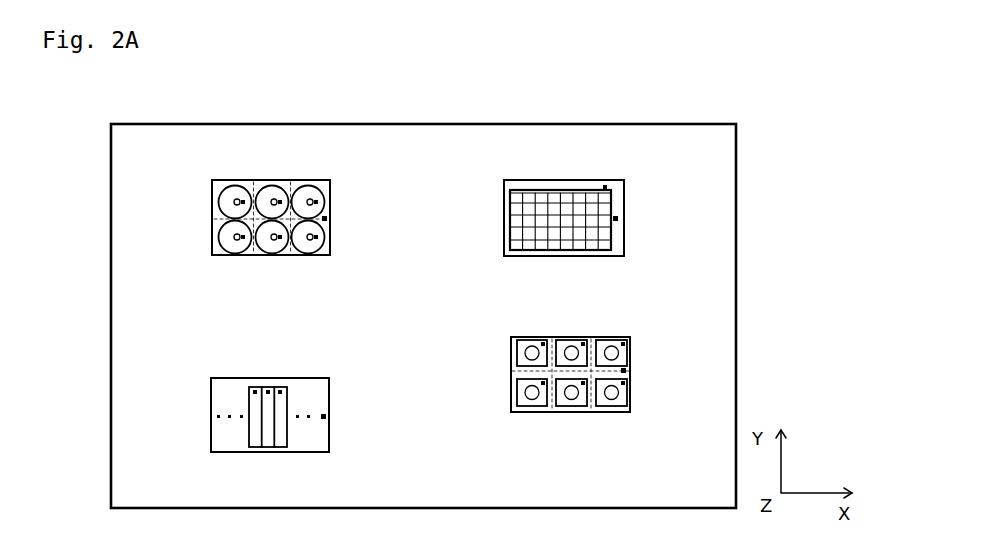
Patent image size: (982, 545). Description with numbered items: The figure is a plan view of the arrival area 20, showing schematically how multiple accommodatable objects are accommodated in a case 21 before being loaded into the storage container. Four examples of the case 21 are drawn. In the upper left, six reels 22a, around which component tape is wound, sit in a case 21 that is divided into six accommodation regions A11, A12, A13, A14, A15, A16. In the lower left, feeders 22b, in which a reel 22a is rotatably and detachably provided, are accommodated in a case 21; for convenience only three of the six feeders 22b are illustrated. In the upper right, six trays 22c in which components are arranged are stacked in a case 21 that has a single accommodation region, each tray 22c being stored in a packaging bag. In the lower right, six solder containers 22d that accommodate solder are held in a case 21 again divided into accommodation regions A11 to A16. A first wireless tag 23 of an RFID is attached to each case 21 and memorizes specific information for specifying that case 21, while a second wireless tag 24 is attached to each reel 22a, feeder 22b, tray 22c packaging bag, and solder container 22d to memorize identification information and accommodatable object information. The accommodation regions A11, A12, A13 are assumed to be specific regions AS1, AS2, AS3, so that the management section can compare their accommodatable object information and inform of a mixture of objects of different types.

The arrival area 20 is at (147, 124).
The case 21 is at (331, 182).
The reel 22a is at (222, 188).
The feeder 22b is at (252, 405).
The tray 22c is at (519, 186).
The solder container 22d is at (517, 350).
The first wireless tag 23 is at (327, 218).
The second wireless tag 24 is at (242, 201).
The accommodation region A11 is at (214, 201).
The accommodation region A12 is at (212, 219).
The accommodation region A13 is at (322, 226).
The accommodation region A14 is at (220, 243).
The accommodation region A15 is at (257, 255).
The accommodation region A16 is at (325, 250).
The specific region AS1 is at (216, 206).
The specific region AS2 is at (216, 233).
The specific region AS3 is at (343, 239).